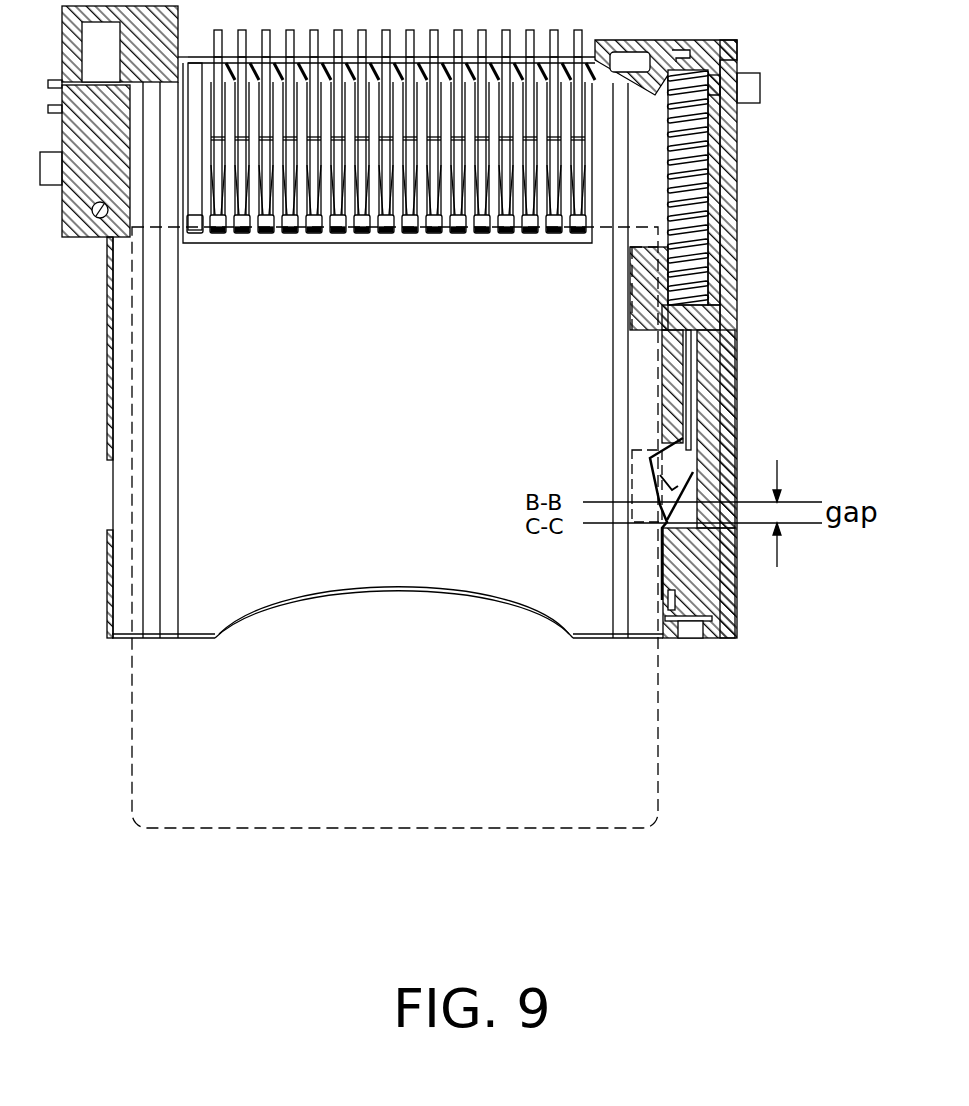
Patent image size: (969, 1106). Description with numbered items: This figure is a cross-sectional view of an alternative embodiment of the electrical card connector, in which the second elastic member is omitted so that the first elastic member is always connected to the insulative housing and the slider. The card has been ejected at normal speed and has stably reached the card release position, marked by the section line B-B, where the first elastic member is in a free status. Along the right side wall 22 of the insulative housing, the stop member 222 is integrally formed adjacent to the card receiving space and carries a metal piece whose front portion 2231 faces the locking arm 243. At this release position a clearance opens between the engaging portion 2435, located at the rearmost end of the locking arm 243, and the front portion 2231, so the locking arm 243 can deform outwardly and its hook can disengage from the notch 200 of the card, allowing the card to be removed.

The notch 200 is at (667, 520).
The engaging portion 2435 is at (695, 482).
The front portion 2231 is at (712, 560).
The right side wall 22 is at (718, 598).
The stop member 222 is at (718, 640).
The locking arm 243 is at (665, 525).